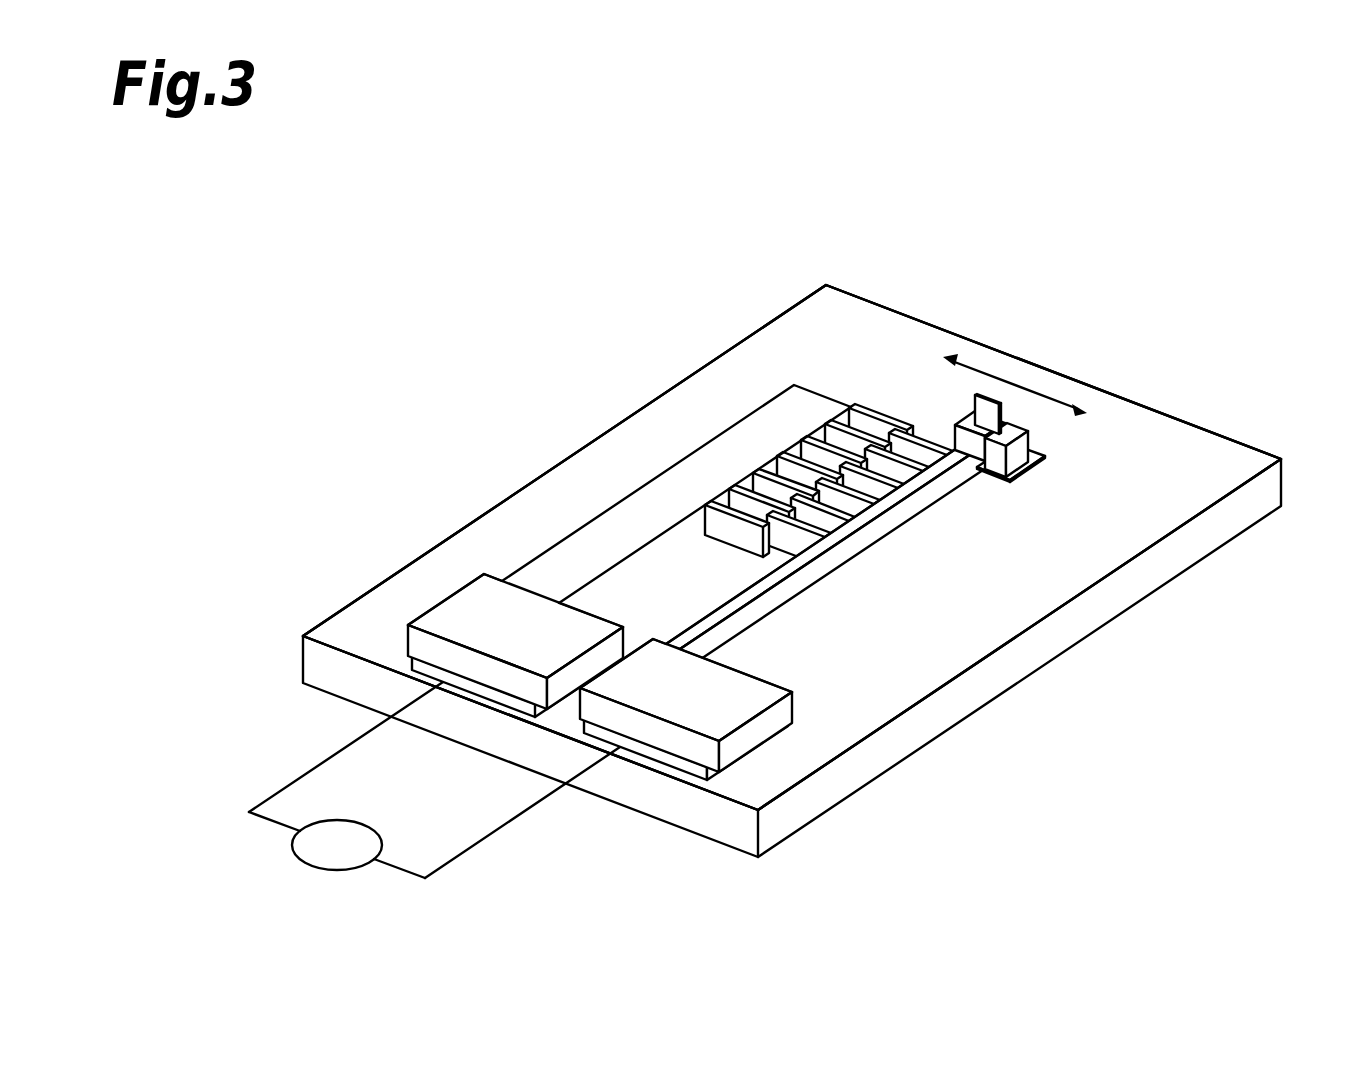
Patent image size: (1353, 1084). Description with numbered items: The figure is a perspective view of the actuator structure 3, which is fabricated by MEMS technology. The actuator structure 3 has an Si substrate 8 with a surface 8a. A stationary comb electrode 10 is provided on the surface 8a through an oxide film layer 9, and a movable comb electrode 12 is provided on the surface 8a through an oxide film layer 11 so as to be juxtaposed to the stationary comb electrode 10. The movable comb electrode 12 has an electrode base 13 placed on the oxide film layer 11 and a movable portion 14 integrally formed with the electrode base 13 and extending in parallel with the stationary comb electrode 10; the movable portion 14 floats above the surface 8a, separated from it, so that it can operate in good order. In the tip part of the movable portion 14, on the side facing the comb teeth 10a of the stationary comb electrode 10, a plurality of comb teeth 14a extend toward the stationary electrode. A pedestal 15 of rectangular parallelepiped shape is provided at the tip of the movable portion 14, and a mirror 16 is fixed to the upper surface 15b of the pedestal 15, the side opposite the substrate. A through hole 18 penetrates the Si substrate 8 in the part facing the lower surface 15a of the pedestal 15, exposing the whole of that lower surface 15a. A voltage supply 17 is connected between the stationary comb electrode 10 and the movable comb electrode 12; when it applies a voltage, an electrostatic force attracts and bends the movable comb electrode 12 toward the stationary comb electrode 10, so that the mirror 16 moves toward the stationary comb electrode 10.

The actuator structure 3 is at (466, 338).
The Si substrate 8 is at (1047, 651).
The surface 8a is at (1212, 458).
The oxide film layer 9 is at (490, 693).
The stationary comb electrode 10 is at (610, 527).
The comb teeth 10a is at (862, 436).
The oxide film layer 11 is at (675, 766).
The movable comb electrode 12 is at (828, 588).
The electrode base 13 is at (770, 733).
The movable portion 14 is at (753, 610).
The comb teeth 14a is at (800, 530).
The pedestal 15 is at (998, 458).
The lower surface 15a is at (1044, 463).
The upper surface 15b is at (968, 418).
The mirror 16 is at (1003, 416).
The voltage supply 17 is at (320, 870).
The through hole 18 is at (1018, 478).